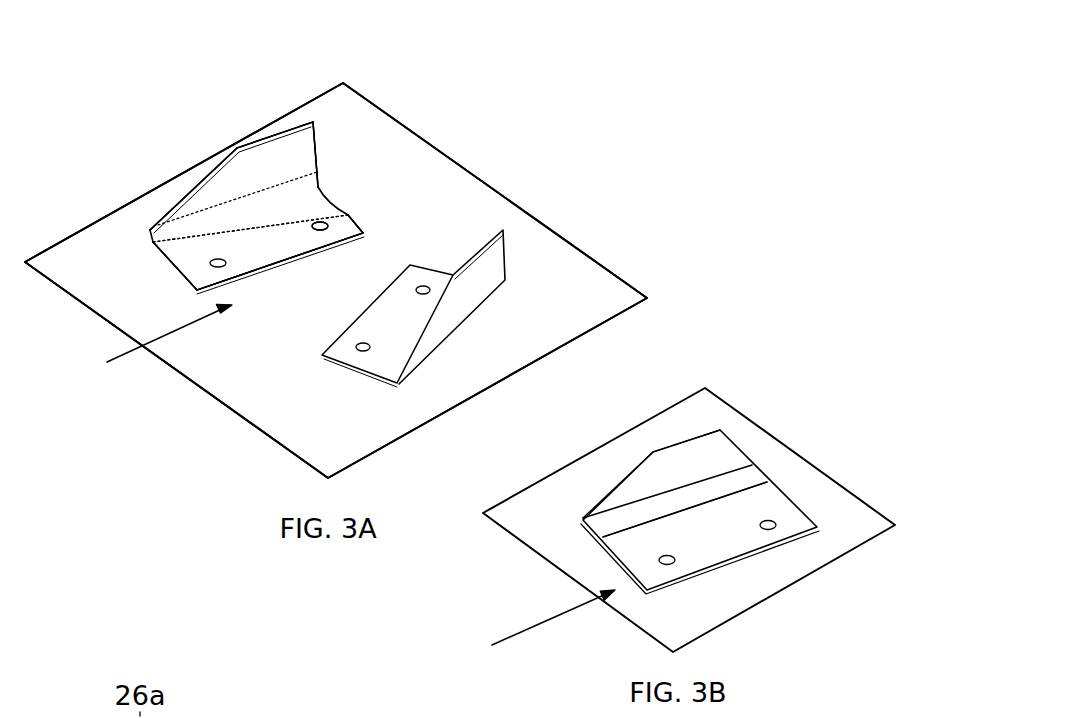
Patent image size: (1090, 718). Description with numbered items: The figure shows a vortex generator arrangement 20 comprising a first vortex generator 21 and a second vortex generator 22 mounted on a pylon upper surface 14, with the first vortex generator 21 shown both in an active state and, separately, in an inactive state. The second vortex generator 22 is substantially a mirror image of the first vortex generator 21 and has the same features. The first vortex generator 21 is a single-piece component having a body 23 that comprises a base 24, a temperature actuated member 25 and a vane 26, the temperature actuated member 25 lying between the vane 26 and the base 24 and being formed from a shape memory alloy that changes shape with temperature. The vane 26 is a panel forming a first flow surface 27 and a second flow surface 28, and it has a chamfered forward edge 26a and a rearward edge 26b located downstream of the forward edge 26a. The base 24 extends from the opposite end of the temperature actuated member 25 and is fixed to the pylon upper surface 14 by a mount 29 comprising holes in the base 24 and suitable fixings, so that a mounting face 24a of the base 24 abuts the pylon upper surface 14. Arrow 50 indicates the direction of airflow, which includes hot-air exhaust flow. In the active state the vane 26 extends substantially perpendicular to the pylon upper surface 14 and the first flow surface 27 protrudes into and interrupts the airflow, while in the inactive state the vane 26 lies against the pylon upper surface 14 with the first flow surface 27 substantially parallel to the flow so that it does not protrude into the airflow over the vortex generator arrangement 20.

In FIG. 3A, the pylon upper surface 14 is at (592, 287).
In FIG. 3B, the pylon upper surface 14 is at (842, 505).
In FIG. 3A, the vortex generator arrangement 20 is at (428, 166).
In FIG. 3A, the first vortex generator 21 is at (292, 90).
In FIG. 3A, the second vortex generator 22 is at (467, 292).
In FIG. 3A, the body 23 is at (185, 255).
In FIG. 3A, the base 24 is at (199, 280).
In FIG. 3B, the base 24 is at (720, 543).
In FIG. 3A, the mounting face 24a is at (270, 267).
In FIG. 3A, the temperature actuated member 25 is at (153, 243).
In FIG. 3B, the temperature actuated member 25 is at (748, 472).
In FIG. 3A, the vane 26 is at (207, 194).
In FIG. 3B, the vane 26 is at (626, 488).
In FIG. 3A, the forward edge 26a is at (214, 162).
In FIG. 3A, the rearward edge 26b is at (318, 148).
In FIG. 3A, the first flow surface 27 is at (313, 122).
In FIG. 3B, the first flow surface 27 is at (722, 447).
In FIG. 3A, the second flow surface 28 is at (268, 136).
In FIG. 3A, the mount 29 is at (325, 223).
In FIG. 3A, the arrow 50 is at (133, 349).
In FIG. 3B, the arrow 50 is at (525, 630).